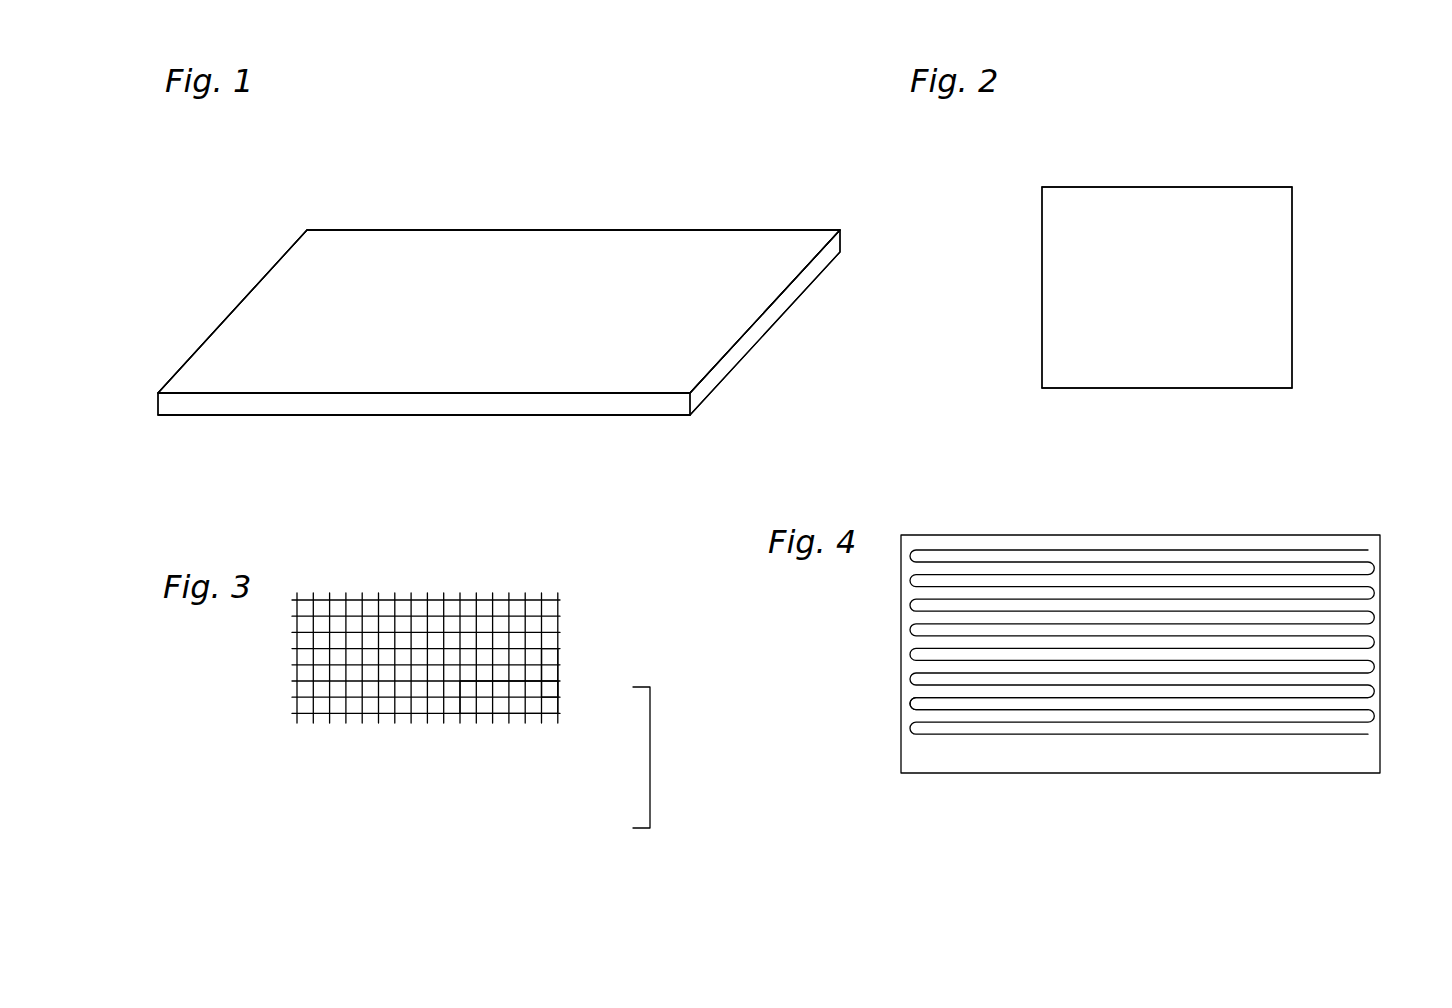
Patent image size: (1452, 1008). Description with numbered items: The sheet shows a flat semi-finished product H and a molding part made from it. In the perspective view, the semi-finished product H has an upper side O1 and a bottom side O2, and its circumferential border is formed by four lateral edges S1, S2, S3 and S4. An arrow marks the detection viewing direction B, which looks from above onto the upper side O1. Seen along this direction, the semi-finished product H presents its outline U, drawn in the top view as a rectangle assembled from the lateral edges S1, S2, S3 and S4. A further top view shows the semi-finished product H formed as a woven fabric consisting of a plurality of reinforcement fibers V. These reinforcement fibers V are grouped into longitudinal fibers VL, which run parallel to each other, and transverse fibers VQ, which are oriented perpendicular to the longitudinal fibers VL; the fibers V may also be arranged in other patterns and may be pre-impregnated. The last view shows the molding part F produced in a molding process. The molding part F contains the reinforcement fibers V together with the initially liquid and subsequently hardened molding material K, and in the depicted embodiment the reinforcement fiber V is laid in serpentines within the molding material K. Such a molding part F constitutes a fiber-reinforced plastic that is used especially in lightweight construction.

In FIG. 1, the semi-finished product H is at (786, 176).
In FIG. 2, the semi-finished product H is at (1222, 376).
In FIG. 3, the semi-finished product H is at (391, 748).
In FIG. 1, the upper side O1 is at (494, 278).
In FIG. 1, the bottom side O2 is at (576, 420).
In FIG. 1, the detection viewing direction B is at (561, 158).
In FIG. 1, the lateral edge S1 is at (295, 408).
In FIG. 2, the lateral edge S1 is at (1098, 392).
In FIG. 1, the lateral edge S2 is at (232, 312).
In FIG. 2, the lateral edge S2 is at (1040, 283).
In FIG. 1, the lateral edge S3 is at (641, 228).
In FIG. 2, the lateral edge S3 is at (1176, 185).
In FIG. 1, the lateral edge S4 is at (760, 328).
In FIG. 2, the lateral edge S4 is at (1294, 281).
In FIG. 2, the outline U is at (1285, 148).
In FIG. 3, the reinforcement fibers V is at (650, 757).
In FIG. 4, the reinforcement fibers V is at (1113, 720).
In FIG. 3, the transverse fibers VQ is at (549, 706).
In FIG. 3, the longitudinal fibers VL is at (512, 694).
In FIG. 4, the molding material K is at (1210, 764).
In FIG. 4, the molding part F is at (1140, 713).